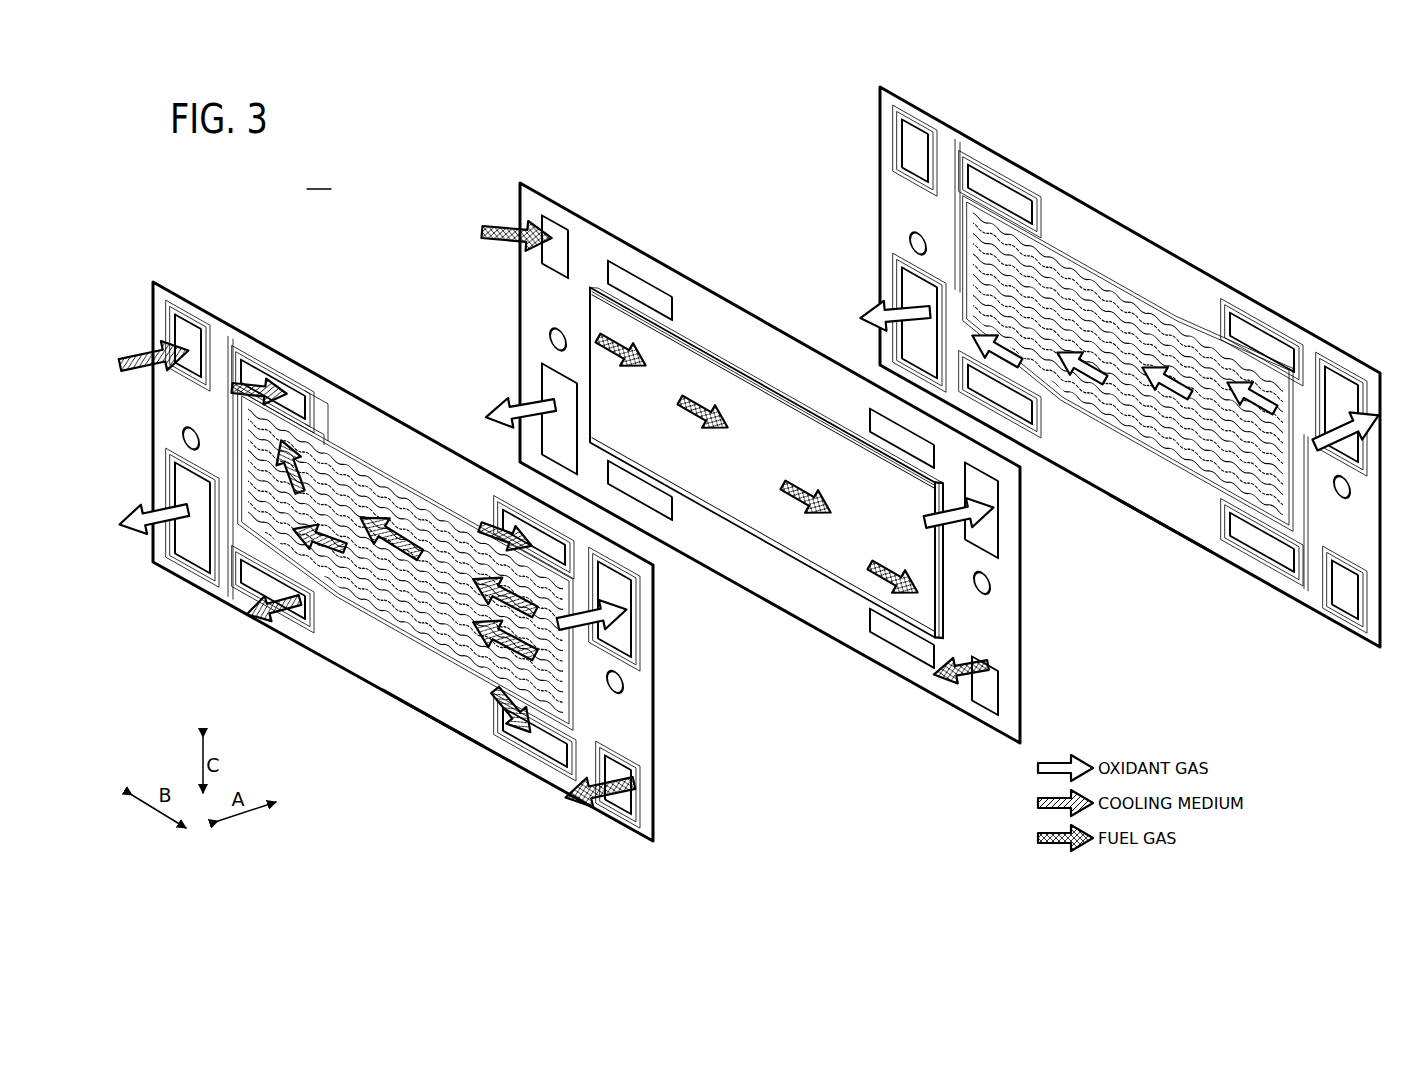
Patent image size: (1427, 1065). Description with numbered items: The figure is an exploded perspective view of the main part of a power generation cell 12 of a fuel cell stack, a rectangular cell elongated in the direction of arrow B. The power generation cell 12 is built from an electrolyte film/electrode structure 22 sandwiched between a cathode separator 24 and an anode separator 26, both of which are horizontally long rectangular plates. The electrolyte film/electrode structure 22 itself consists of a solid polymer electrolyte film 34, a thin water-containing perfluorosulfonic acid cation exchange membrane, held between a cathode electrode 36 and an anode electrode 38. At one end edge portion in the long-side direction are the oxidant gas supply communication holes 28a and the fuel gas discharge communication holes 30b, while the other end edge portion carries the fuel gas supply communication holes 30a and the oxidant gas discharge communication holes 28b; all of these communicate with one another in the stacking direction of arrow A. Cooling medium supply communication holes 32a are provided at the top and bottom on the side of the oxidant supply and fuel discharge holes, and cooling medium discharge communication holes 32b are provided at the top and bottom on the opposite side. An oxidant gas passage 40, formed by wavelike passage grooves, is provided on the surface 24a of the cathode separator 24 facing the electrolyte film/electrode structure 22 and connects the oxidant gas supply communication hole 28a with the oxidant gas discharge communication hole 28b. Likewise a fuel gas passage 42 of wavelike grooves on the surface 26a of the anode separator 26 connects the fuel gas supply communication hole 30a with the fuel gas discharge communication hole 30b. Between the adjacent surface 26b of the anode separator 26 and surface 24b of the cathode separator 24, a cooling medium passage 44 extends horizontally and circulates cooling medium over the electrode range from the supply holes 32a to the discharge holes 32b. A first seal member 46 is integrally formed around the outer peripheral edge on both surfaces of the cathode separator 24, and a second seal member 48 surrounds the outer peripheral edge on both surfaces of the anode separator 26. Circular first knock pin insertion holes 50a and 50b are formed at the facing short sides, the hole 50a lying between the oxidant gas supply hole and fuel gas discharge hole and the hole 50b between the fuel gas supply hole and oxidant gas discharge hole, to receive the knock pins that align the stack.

The power generation cell 12 is at (319, 177).
The electrolyte film/electrode structure 22 is at (520, 182).
The cathode separator 24 is at (878, 89).
The surface of the cathode separator 24a is at (1140, 486).
The surface of the cathode separator 24b is at (1180, 512).
The anode separator 26 is at (153, 281).
The surface of the anode separator 26a is at (446, 695).
The surface of the anode separator 26b is at (403, 680).
The oxidant gas supply communication hole 28a is at (626, 622).
The oxidant gas discharge communication hole 28b is at (192, 555).
The fuel gas supply communication hole 30a is at (188, 340).
The fuel gas discharge communication hole 30b is at (626, 777).
The cooling medium supply communication hole 32a is at (545, 520).
The cooling medium discharge communication hole 32b is at (259, 372).
The solid polymer electrolyte film 34 is at (806, 606).
The cathode electrode 36 is at (745, 350).
The anode electrode 38 is at (790, 566).
The oxidant gas passage 40 is at (1142, 318).
The fuel gas passage 42 is at (366, 450).
The cooling medium passage 44 is at (358, 592).
The first seal member 46 is at (1066, 245).
The second seal member 48 is at (302, 392).
The first knock pin insertion hole 50a is at (632, 685).
The first knock pin insertion hole 50b is at (182, 437).